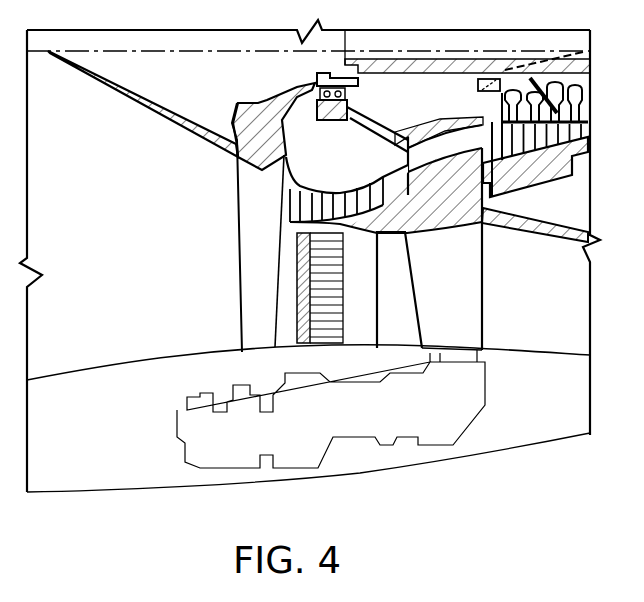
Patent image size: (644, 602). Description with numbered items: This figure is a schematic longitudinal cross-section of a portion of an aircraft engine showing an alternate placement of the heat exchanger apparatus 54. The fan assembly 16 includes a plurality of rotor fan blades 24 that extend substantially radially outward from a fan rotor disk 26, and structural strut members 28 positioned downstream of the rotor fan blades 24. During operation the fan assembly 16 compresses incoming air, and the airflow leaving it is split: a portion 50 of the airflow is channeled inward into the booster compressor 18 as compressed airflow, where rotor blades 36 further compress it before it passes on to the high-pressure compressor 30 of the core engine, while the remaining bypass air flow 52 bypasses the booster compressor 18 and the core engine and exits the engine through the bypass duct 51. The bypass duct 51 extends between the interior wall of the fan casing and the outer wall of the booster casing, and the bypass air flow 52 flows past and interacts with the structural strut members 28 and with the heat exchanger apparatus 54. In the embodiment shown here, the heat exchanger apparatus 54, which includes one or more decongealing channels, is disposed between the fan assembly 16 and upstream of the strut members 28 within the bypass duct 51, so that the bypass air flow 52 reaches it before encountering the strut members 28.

The fan assembly 16 is at (135, 232).
The booster compressor 18 is at (350, 236).
The rotor fan blades 24 is at (258, 232).
The fan rotor disk 26 is at (263, 115).
The structural strut members 28 is at (403, 256).
The high-pressure compressor 30 is at (558, 162).
The rotor blades 36 is at (354, 180).
The portion of the airflow 50 is at (300, 206).
The bypass duct 51 is at (553, 327).
The bypass air flow 52 is at (440, 324).
The heat exchanger apparatus 54 is at (290, 295).